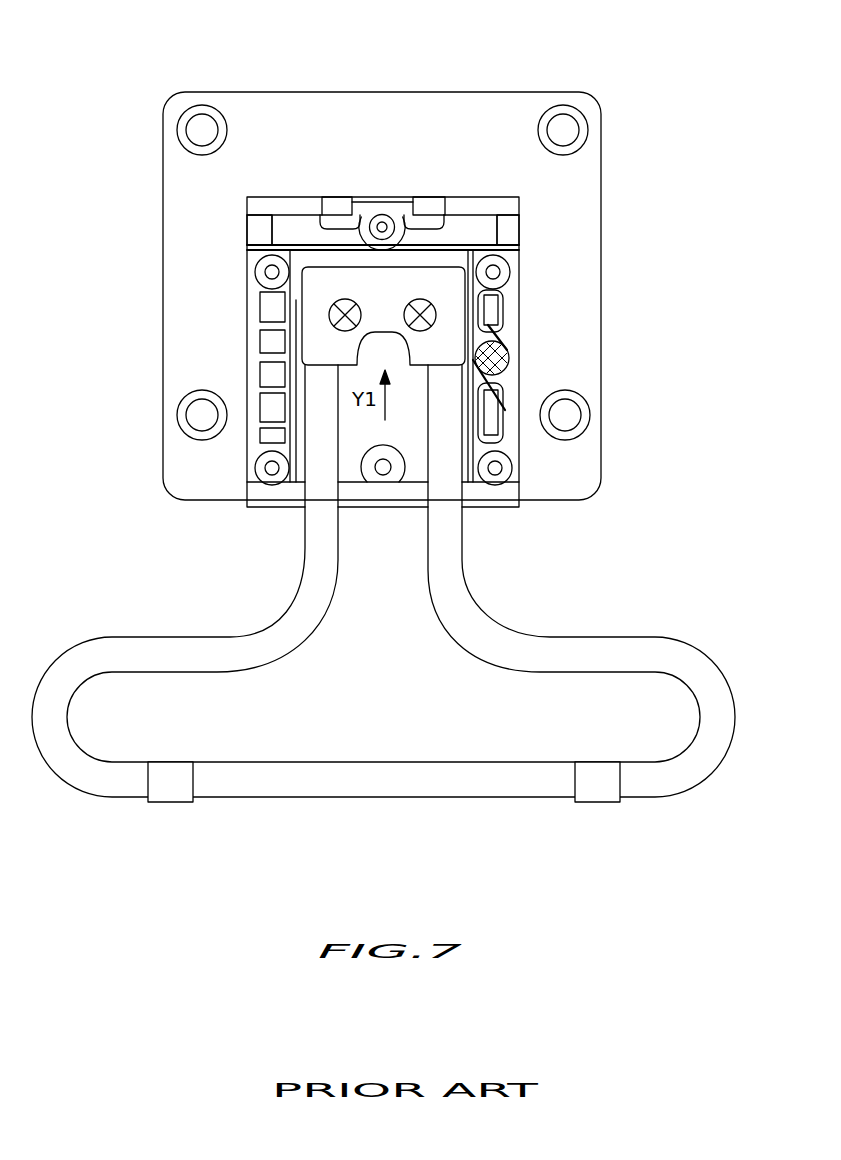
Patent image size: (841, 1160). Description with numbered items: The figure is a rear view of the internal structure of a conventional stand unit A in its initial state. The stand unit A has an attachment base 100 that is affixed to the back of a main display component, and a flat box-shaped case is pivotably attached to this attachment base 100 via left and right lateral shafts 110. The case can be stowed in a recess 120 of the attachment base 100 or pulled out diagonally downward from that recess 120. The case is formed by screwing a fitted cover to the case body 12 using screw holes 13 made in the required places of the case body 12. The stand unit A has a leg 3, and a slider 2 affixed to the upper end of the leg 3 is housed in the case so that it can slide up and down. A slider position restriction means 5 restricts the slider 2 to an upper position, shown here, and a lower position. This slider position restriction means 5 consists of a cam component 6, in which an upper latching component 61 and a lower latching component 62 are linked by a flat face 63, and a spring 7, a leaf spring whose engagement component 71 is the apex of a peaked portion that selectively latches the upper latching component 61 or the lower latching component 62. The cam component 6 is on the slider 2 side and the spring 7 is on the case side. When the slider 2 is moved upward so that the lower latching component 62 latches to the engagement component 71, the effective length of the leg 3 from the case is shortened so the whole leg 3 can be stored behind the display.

The stand unit A is at (393, 255).
The attachment base 100 is at (495, 92).
The lateral shafts 110 is at (255, 232).
The case body 12 is at (250, 310).
The recess 120 is at (248, 345).
The screw 13 is at (257, 275).
The slider 2 is at (310, 257).
The leg 3 is at (645, 638).
The slider position restriction means 5 is at (498, 313).
The cam component 6 is at (487, 313).
The upper latching component 61 is at (467, 258).
The lower latching component 62 is at (472, 338).
The flat face 63 is at (480, 302).
The spring 7 is at (482, 385).
The engagement component 71 is at (470, 368).